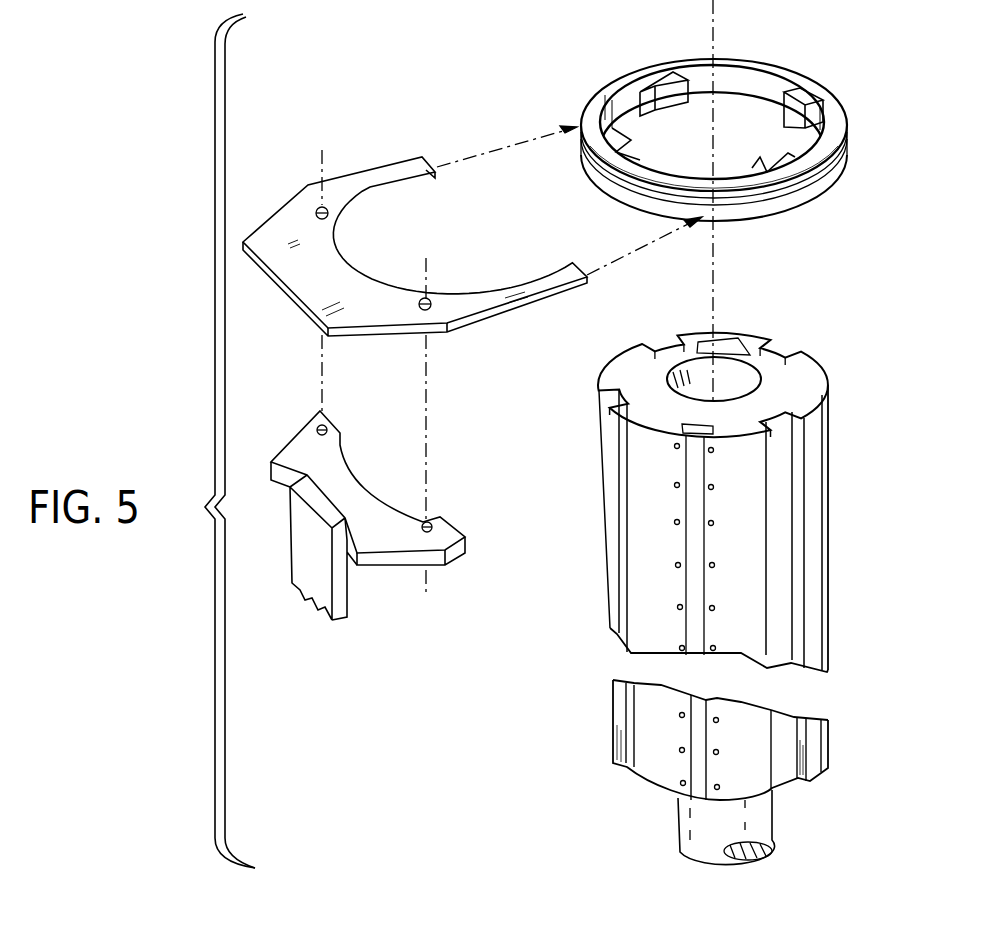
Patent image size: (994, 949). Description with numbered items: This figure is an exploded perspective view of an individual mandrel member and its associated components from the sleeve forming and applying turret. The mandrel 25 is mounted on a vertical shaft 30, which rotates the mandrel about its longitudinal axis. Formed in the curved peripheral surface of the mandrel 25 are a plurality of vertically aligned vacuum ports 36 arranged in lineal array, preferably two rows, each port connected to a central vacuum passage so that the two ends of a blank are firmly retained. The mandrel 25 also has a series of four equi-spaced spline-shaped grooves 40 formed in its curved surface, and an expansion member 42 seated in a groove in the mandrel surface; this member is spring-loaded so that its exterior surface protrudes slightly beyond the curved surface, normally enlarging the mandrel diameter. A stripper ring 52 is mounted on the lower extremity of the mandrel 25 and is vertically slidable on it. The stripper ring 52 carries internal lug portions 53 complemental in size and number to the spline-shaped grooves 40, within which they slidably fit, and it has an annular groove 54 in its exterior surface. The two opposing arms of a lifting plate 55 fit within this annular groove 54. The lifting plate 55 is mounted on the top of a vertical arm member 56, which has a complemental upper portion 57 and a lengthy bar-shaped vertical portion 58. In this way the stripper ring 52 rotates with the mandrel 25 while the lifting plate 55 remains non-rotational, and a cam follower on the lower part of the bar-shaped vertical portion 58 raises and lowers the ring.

The mandrel 25 is at (748, 579).
The vertical shaft 30 is at (778, 827).
The vacuum ports 36 is at (713, 522).
The spline-shaped grooves 40 is at (623, 410).
The expansion member 42 is at (735, 345).
The stripper ring 52 is at (766, 66).
The internal lug portions 53 is at (772, 160).
The annular groove 54 is at (793, 200).
The lifting plate 55 is at (480, 322).
The vertical arm member 56 is at (368, 552).
The upper portion 57 is at (350, 477).
The bar-shaped vertical portion 58 is at (338, 620).